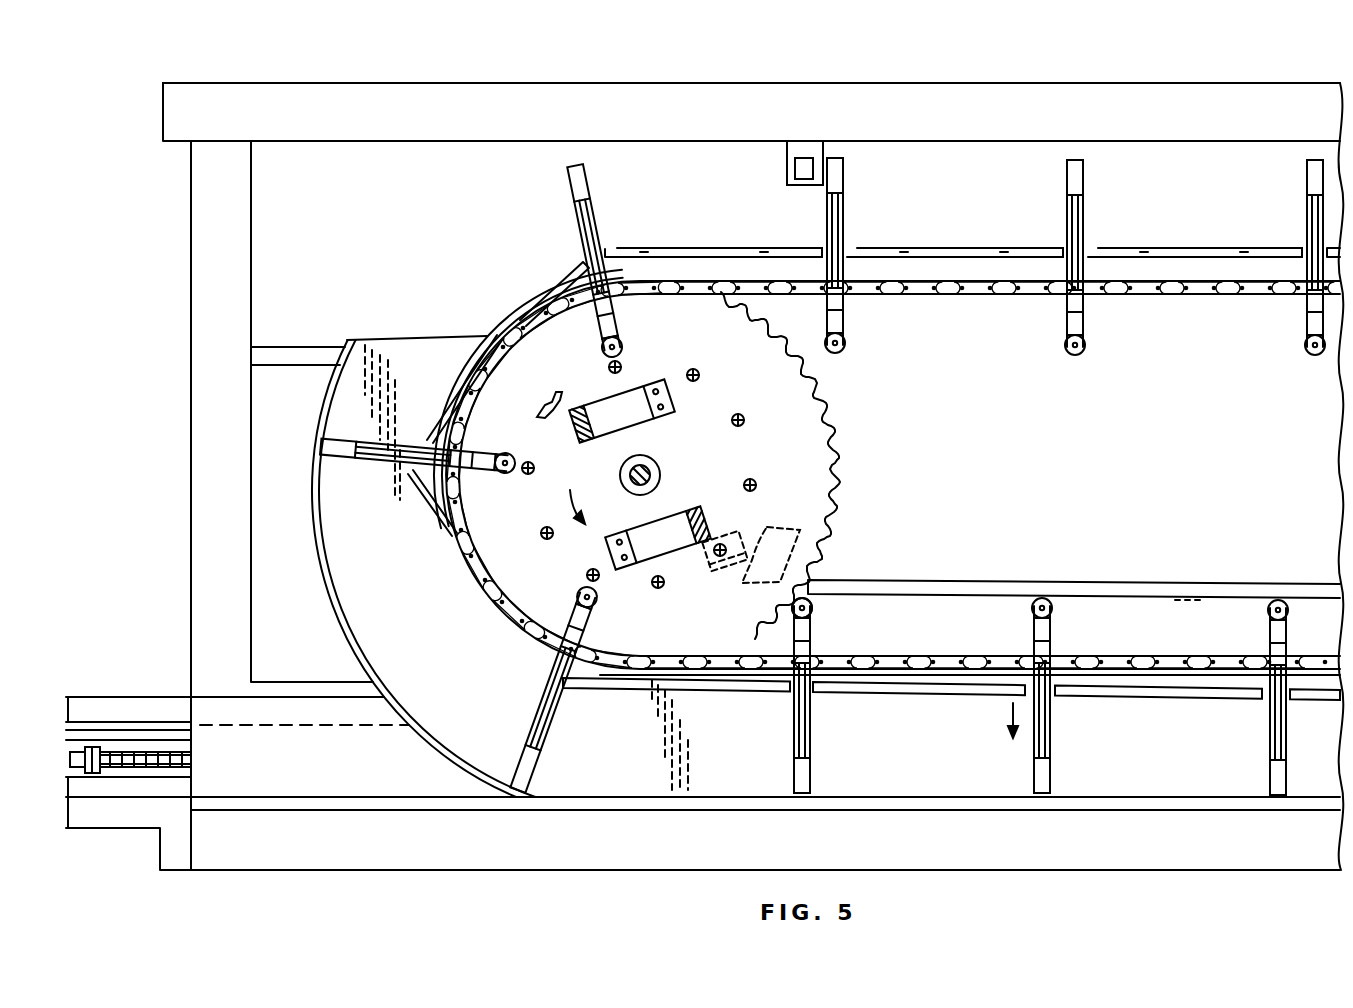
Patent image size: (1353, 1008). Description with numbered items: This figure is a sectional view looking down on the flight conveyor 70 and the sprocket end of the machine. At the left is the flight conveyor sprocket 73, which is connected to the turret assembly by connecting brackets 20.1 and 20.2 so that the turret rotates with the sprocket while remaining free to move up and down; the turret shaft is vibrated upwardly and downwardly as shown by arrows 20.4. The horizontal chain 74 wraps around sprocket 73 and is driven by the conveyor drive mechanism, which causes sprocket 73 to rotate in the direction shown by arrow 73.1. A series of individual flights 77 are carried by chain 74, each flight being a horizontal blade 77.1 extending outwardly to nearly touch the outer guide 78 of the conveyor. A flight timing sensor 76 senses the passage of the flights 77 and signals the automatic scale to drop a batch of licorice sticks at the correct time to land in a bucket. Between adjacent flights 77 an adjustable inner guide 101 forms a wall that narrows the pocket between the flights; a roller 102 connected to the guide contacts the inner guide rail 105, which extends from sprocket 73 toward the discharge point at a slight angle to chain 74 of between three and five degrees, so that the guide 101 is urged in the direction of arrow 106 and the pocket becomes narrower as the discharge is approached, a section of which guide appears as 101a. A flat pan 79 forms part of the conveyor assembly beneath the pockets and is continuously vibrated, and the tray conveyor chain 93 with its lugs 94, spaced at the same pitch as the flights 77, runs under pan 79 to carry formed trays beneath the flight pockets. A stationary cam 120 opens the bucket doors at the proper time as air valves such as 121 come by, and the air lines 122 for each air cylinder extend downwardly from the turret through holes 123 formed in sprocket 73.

The flight conveyor 70 is at (386, 619).
The flight conveyor sprocket 73 is at (812, 406).
The arrow 73.1 is at (569, 502).
The horizontal chain 74 is at (927, 295).
The flight timing sensor 76 is at (787, 166).
The flight 77 is at (566, 190).
The horizontal blade 77.1 is at (792, 771).
The outer guide 78 is at (446, 754).
The flat pan 79 is at (1103, 779).
The tray conveyor chain 93 is at (124, 767).
The lug 94 is at (95, 746).
The adjustable inner guide 101 is at (605, 691).
The guide plate section 101a is at (1197, 718).
The roller 102 is at (812, 609).
The inner guide rail 105 is at (988, 578).
The arrow 106 is at (1008, 722).
The stationary cam 120 is at (767, 535).
The air valve 121 is at (740, 568).
The air line 122 is at (738, 414).
The hole 123 is at (752, 479).
The connecting bracket 20.1 is at (565, 442).
The connecting bracket 20.2 is at (637, 573).
The arrows 20.4 is at (655, 472).